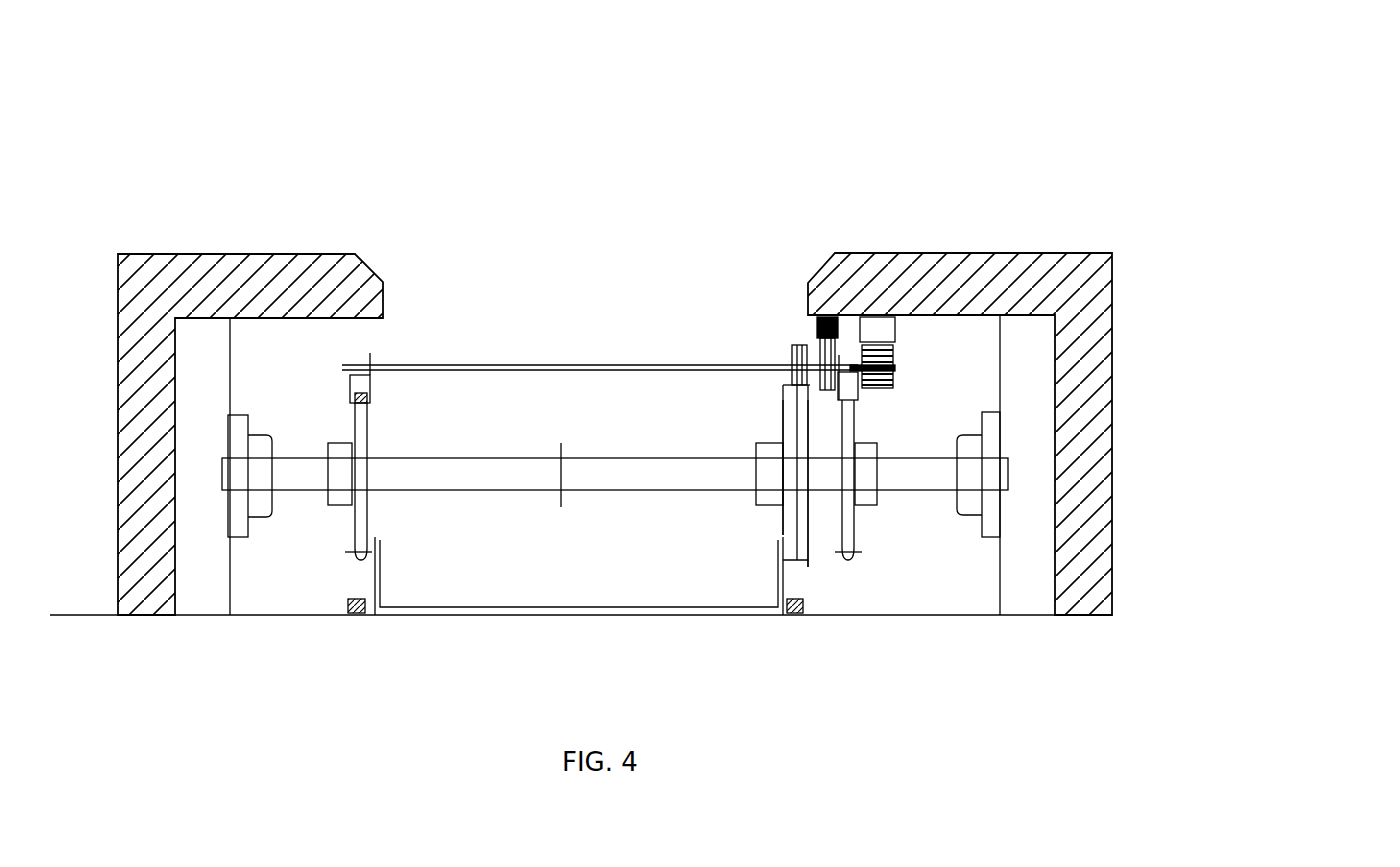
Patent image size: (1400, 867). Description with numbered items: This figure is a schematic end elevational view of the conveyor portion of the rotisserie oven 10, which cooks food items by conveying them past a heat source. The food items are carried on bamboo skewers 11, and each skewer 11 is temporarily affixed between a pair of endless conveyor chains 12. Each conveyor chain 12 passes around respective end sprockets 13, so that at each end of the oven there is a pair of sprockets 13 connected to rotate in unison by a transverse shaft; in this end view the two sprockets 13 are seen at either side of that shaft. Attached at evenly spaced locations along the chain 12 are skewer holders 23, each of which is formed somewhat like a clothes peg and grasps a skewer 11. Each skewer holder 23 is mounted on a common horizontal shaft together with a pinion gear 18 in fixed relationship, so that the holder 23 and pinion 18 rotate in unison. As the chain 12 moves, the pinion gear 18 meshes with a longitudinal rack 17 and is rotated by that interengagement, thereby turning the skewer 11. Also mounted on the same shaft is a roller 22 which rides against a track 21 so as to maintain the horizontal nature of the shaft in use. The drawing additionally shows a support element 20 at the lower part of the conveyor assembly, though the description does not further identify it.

The rotisserie oven 10 is at (1264, 141).
The bamboo skewer 11 is at (528, 362).
The endless conveyor chain 12 is at (350, 391).
The end sprocket 13 is at (367, 435).
The longitudinal rack 17 is at (895, 332).
The pinion gear 18 is at (893, 386).
The support housing 20 is at (797, 518).
The track 21 is at (814, 322).
The roller 22 is at (789, 428).
The skewer holder 23 is at (790, 348).